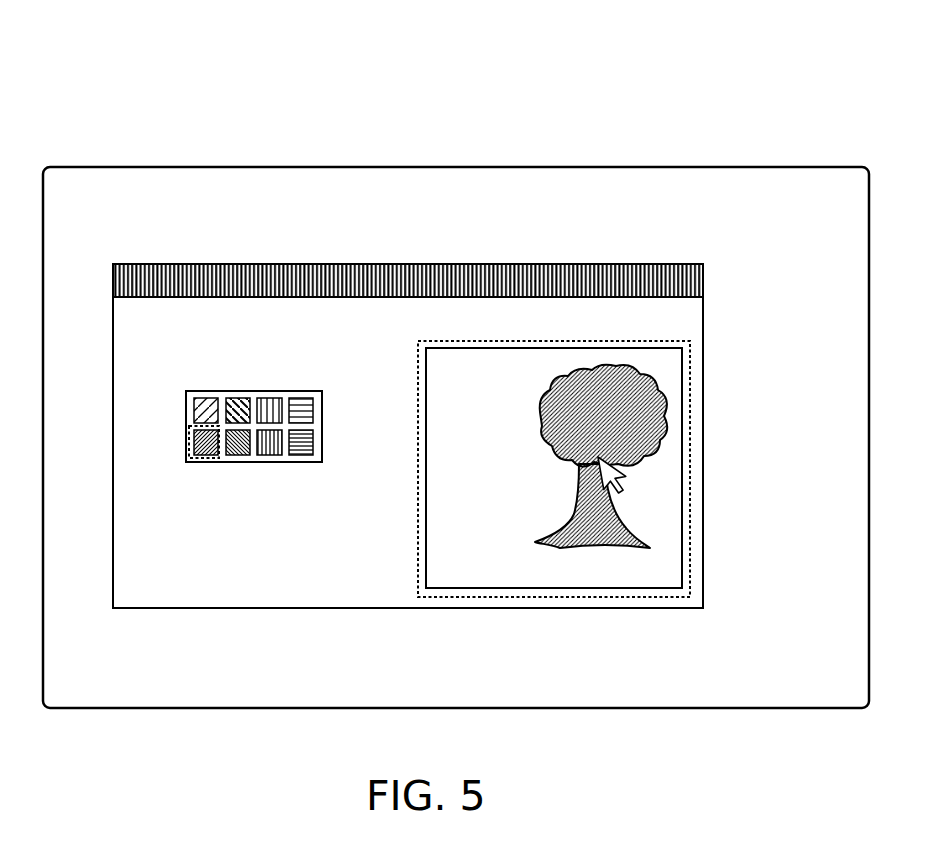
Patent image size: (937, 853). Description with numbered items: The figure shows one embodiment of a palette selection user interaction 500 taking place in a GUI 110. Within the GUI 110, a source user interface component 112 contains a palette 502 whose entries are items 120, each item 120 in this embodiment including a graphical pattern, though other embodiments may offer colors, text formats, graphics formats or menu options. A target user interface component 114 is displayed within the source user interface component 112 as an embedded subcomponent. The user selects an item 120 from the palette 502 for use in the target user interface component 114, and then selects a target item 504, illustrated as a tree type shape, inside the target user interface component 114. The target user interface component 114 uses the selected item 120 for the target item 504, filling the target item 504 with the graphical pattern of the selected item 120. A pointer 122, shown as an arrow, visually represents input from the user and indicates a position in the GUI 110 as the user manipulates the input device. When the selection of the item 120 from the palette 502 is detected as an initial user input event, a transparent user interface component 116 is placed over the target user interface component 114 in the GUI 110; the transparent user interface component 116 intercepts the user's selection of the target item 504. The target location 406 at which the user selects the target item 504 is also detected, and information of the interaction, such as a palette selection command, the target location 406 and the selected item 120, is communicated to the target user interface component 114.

The palette selection user interaction 500 is at (58, 56).
The GUI 110 is at (84, 174).
The source user interface component 112 is at (134, 270).
The target user interface component 114 is at (452, 354).
The transparent user interface component 116 is at (541, 341).
The item 120 is at (192, 458).
The pointer 122 is at (613, 478).
The target location 406 is at (579, 468).
The palette 502 is at (194, 395).
The target item 504 is at (562, 399).